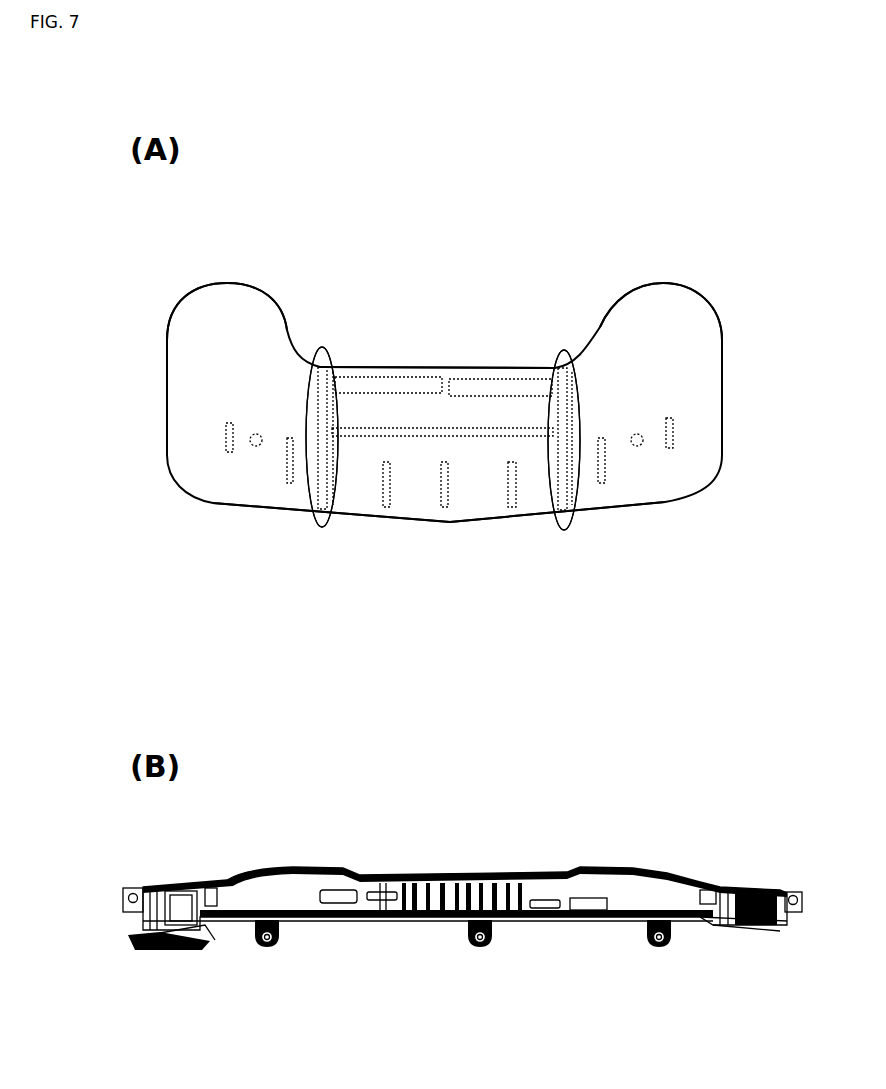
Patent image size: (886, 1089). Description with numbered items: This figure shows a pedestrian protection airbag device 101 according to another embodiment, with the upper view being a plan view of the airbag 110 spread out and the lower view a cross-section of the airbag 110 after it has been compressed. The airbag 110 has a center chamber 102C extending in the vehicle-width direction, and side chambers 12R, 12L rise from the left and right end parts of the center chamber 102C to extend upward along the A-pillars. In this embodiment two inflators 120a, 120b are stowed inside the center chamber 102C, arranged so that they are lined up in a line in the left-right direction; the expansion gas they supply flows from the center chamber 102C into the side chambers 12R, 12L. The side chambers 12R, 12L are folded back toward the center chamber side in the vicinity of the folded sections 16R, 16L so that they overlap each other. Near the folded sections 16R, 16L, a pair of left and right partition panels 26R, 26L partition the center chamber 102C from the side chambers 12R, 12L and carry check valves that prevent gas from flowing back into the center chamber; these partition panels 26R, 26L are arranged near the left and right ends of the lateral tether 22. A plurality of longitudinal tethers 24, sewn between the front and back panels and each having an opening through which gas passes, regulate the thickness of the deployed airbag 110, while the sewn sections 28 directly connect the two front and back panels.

The pedestrian protection airbag device 101 is at (495, 262).
The airbag 110 is at (250, 283).
The side chamber 12R is at (197, 302).
The side chamber 12L is at (693, 298).
The folded section 16R is at (322, 348).
The folded section 16L is at (563, 530).
The sewn section 28 is at (263, 430).
The inflator 120a is at (383, 377).
The inflator 120b is at (490, 379).
The lateral tether 22 is at (372, 436).
The longitudinal tether 24 is at (223, 443).
The partition panel 26R is at (317, 498).
The partition panel 26L is at (570, 498).
The center chamber 102C is at (482, 505).